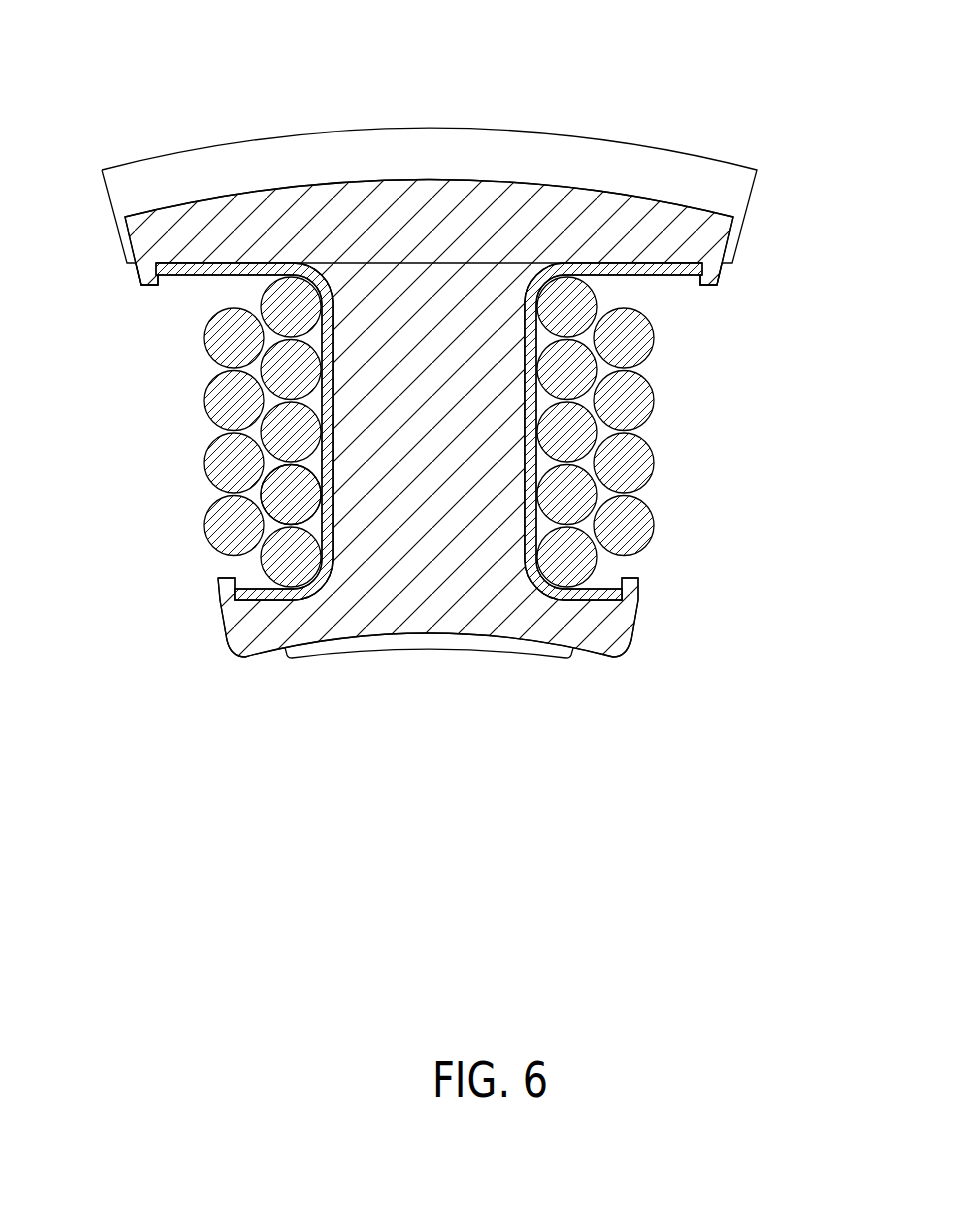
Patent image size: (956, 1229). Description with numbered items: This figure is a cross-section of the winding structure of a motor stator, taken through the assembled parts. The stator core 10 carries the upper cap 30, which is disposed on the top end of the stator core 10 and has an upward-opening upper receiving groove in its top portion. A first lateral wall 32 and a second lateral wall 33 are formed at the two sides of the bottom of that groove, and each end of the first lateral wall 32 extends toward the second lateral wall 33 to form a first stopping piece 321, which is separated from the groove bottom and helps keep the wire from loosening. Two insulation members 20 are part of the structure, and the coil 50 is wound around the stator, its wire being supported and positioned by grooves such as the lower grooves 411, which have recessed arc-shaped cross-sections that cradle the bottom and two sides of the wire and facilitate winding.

The stator core 10 is at (408, 130).
The upper cap 30 is at (514, 172).
The first lateral wall 32 is at (675, 227).
The first stopping piece 321 is at (720, 282).
The second lateral wall 33 is at (538, 615).
The insulation member 20 is at (645, 273).
The coil 50 is at (637, 462).
The lower groove 411 is at (318, 495).